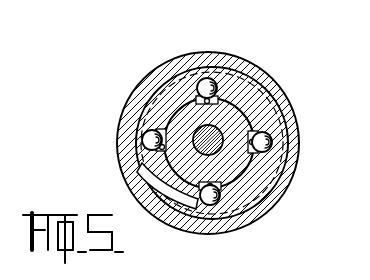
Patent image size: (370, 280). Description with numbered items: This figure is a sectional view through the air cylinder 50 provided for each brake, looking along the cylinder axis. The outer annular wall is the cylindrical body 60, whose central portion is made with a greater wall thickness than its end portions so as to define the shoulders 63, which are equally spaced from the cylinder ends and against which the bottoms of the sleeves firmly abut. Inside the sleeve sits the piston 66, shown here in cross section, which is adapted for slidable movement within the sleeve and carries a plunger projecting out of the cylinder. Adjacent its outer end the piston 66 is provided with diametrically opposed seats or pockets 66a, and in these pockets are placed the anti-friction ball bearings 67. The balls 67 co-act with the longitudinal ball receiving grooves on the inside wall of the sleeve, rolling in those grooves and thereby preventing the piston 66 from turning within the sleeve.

The air cylinder 50 is at (287, 190).
The cylindrical body 60 is at (293, 109).
The shoulders 63 is at (276, 159).
The piston 66 is at (264, 105).
The seats or pockets 66a is at (236, 92).
The anti-friction ball bearings 67 is at (208, 80).